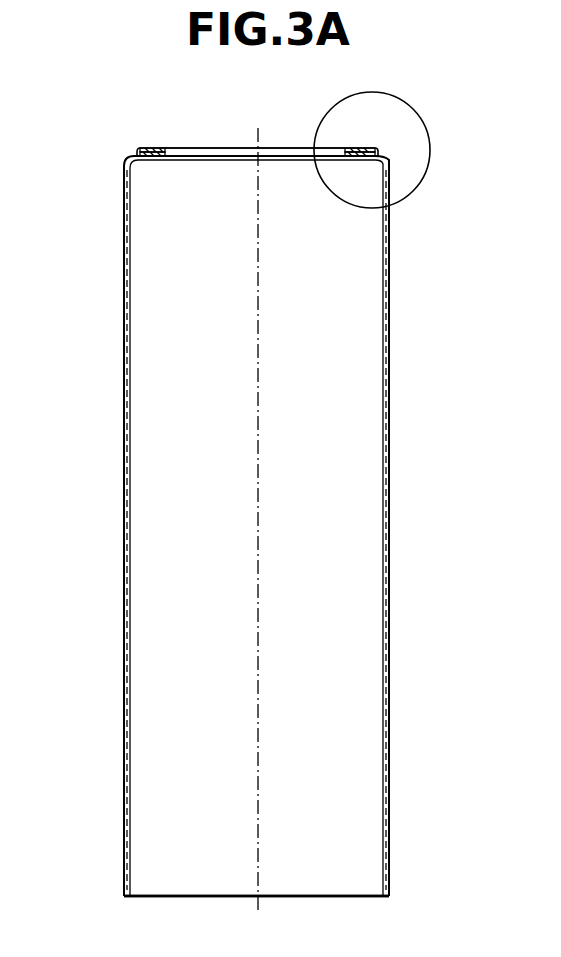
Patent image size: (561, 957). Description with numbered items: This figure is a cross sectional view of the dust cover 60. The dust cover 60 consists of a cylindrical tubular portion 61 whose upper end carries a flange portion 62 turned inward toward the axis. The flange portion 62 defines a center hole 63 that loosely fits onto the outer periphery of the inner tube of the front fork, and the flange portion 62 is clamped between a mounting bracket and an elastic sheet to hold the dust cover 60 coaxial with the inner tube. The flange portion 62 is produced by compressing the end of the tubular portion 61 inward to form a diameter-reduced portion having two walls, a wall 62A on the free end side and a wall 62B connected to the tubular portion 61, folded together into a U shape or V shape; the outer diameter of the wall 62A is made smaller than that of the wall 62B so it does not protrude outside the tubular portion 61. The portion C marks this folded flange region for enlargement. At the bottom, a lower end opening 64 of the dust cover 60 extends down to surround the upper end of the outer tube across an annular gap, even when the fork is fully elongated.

The dust cover 60 is at (124, 333).
The cylindrical tubular portion 61 is at (124, 447).
The flange portion 62 is at (142, 150).
The wall 62A is at (150, 149).
The wall 62B is at (150, 158).
The center hole 63 is at (176, 150).
The lower end opening 64 is at (128, 880).
The portion C is at (430, 122).